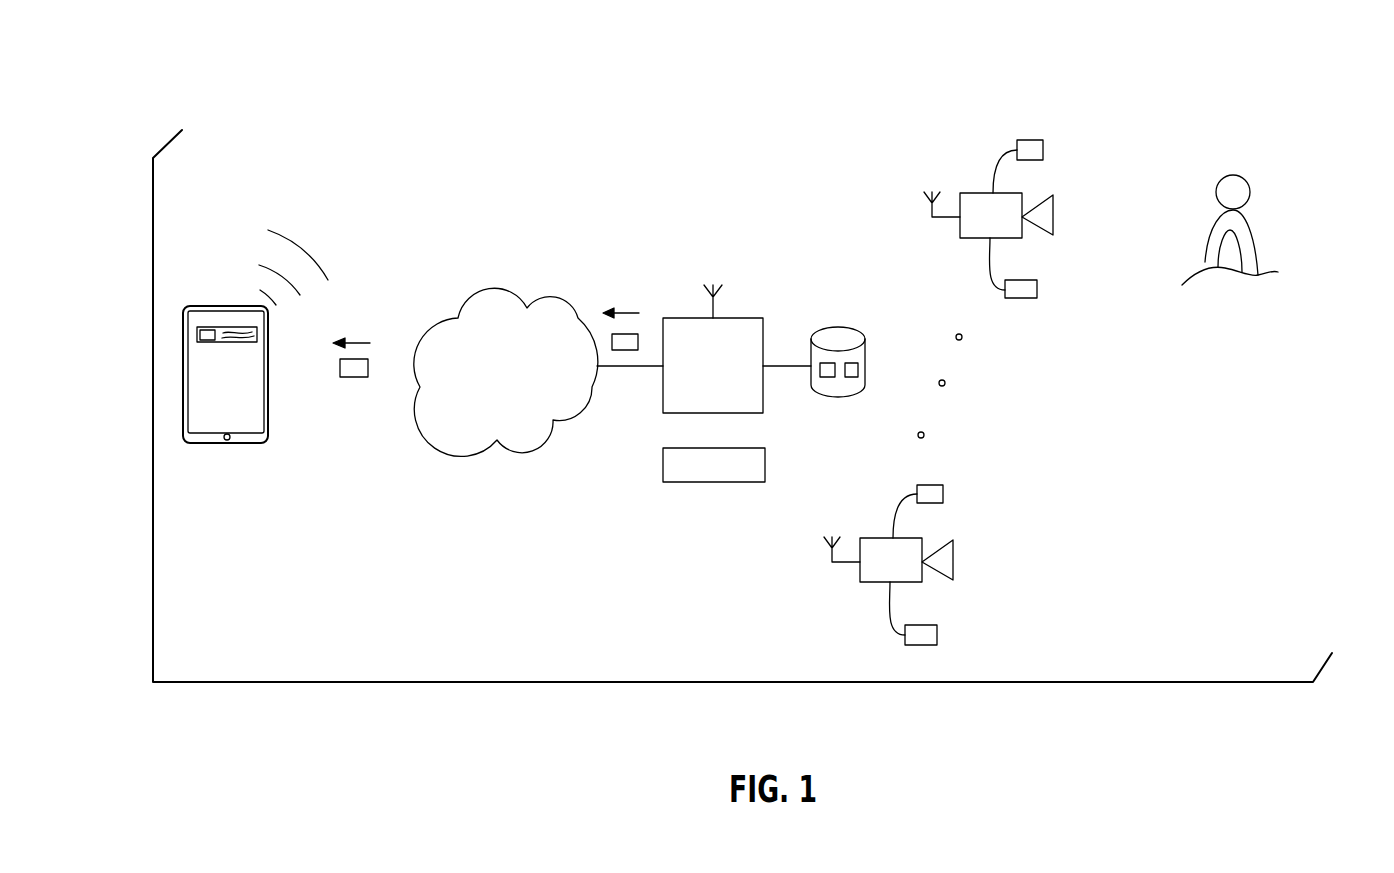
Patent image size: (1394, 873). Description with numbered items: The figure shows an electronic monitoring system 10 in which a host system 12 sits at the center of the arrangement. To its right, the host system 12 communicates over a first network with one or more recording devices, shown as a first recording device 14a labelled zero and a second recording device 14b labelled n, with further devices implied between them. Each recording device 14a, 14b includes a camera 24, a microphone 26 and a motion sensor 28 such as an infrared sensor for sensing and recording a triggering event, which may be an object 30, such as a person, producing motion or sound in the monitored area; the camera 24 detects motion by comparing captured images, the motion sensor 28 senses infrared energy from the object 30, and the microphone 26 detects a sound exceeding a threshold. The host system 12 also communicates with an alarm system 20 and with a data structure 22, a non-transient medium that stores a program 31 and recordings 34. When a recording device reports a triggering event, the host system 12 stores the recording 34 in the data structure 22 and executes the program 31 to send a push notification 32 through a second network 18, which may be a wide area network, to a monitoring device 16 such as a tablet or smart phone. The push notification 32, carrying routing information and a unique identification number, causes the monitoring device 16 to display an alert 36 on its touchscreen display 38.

The electronic monitoring system 10 is at (520, 86).
The host system 12 is at (743, 318).
The first recording device 14a is at (952, 177).
The second recording device 14b is at (852, 519).
The monitoring device 16 is at (270, 420).
The second network 18 is at (491, 424).
The alarm system 20 is at (697, 483).
The data structure 22 is at (837, 333).
The camera 24 is at (1050, 217).
The microphone 26 is at (1043, 145).
The motion sensor 28 is at (1037, 285).
The object 30 is at (1280, 211).
The program 31 is at (822, 382).
The push notification 32 is at (368, 368).
The recording 34 is at (847, 380).
The alert 36 is at (212, 328).
The touchscreen display 38 is at (250, 372).